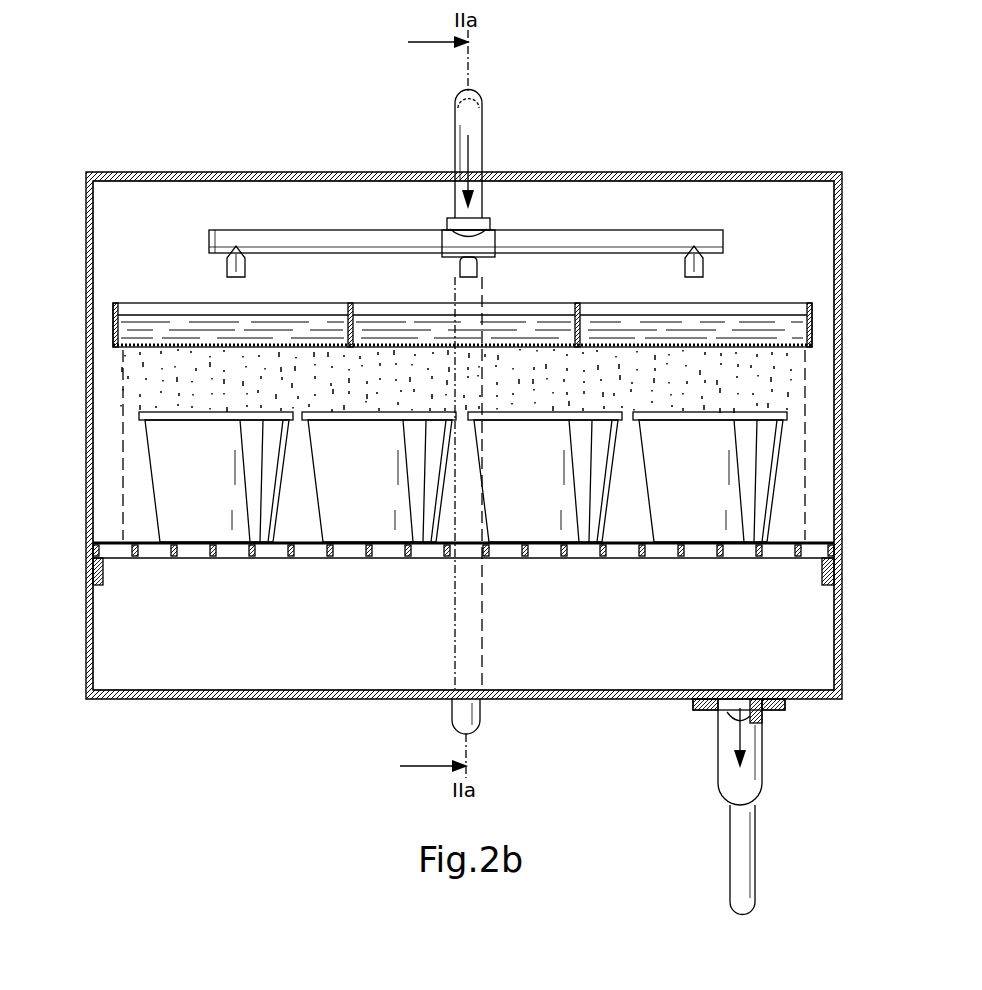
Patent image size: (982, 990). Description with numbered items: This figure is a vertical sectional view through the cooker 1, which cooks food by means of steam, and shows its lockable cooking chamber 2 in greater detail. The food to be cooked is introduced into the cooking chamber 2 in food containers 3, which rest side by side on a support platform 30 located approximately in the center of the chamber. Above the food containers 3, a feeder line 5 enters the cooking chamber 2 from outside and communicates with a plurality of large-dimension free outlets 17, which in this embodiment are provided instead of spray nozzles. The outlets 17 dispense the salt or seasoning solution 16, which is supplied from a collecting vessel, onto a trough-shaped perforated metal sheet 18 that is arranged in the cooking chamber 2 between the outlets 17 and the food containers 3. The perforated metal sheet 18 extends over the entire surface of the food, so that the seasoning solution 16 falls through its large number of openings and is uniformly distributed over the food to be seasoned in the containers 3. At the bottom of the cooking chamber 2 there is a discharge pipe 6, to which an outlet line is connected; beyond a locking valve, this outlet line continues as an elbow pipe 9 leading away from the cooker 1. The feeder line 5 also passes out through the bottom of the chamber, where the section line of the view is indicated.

The cooker 1 is at (704, 166).
The cooking chamber 2 is at (765, 231).
The food container 3 is at (223, 496).
The feeder line 5 is at (480, 156).
The discharge pipe 6 is at (722, 743).
The elbow pipe 9 is at (745, 859).
The salt or seasoning solution 16 is at (752, 318).
The free outlets 17 is at (247, 268).
The trough-shaped perforated metal sheet 18 is at (800, 350).
The support platform 30 is at (782, 545).